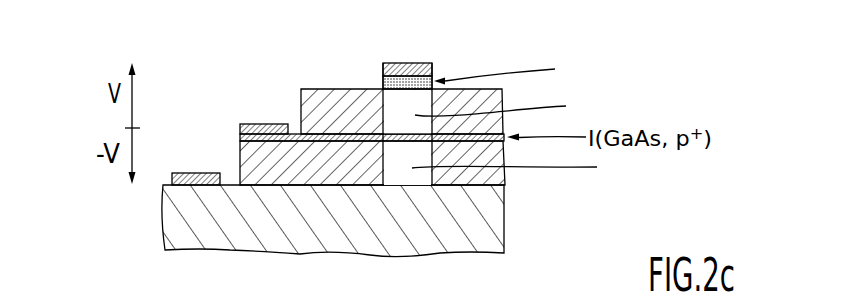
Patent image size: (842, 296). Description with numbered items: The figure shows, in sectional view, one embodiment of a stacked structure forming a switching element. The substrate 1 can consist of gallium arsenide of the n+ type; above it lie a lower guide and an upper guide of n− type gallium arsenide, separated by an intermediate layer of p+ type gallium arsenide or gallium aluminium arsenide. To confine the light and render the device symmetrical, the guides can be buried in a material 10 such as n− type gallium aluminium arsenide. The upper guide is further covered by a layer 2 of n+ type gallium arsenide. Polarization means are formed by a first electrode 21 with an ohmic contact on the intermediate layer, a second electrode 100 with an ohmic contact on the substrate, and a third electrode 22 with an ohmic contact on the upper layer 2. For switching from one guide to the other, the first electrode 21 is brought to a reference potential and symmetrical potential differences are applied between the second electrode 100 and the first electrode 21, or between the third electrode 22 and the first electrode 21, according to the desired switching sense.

The substrate 1 is at (468, 230).
The layer of gallium arsenide of the n+ type 2 is at (384, 80).
The material 10 is at (249, 164).
The first electrode 21 is at (263, 112).
The third electrode 22 is at (403, 53).
The second electrode 100 is at (204, 161).